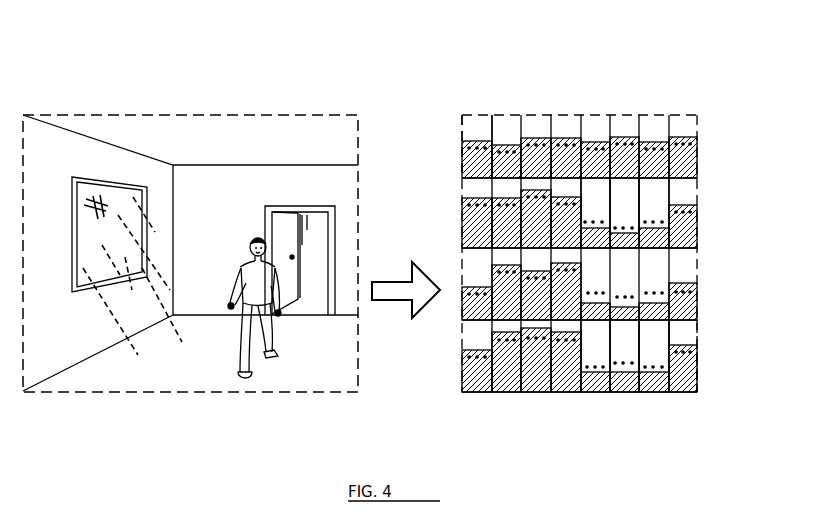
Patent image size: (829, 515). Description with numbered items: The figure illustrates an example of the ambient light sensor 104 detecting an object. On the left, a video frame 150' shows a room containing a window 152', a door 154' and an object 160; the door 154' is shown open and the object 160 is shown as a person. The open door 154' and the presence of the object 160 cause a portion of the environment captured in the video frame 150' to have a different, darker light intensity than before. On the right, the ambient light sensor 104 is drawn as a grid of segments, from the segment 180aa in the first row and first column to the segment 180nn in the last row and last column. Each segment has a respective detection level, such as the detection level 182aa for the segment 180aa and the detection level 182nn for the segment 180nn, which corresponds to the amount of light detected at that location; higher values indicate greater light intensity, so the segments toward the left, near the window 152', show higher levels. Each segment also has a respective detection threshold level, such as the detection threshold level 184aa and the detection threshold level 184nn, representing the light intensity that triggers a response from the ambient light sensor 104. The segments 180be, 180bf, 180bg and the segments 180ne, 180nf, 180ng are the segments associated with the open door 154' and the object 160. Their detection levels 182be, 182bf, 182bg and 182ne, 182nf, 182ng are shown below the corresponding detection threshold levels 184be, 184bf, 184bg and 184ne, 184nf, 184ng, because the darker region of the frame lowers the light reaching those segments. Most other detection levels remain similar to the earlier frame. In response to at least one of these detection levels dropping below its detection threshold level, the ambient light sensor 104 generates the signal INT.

The ambient light sensor 104 is at (555, 30).
The video frame 150' is at (190, 241).
The window 152' is at (110, 254).
The door 154' is at (282, 248).
The object 160 is at (252, 238).
The segment 180aa is at (478, 116).
The segment 180be is at (592, 188).
The segment 180bf is at (623, 188).
The segment 180bg is at (650, 188).
The segment 180ne is at (595, 393).
The segment 180nf is at (628, 393).
The segment 180ng is at (645, 393).
The segment 180nn is at (688, 393).
The detection level 182aa is at (470, 140).
The detection level 182be is at (583, 220).
The detection level 182bf is at (627, 248).
The detection level 182bg is at (658, 235).
The detection level 182ne is at (592, 388).
The detection level 182nf is at (625, 387).
The detection level 182ng is at (652, 390).
The detection level 182nn is at (683, 348).
The detection threshold level 184aa is at (470, 149).
The detection threshold level 184be is at (580, 243).
The detection threshold level 184bf is at (623, 220).
The detection threshold level 184bg is at (653, 222).
The detection threshold level 184ne is at (582, 368).
The detection threshold level 184nf is at (630, 363).
The detection threshold level 184ng is at (648, 363).
The detection threshold level 184nn is at (692, 352).